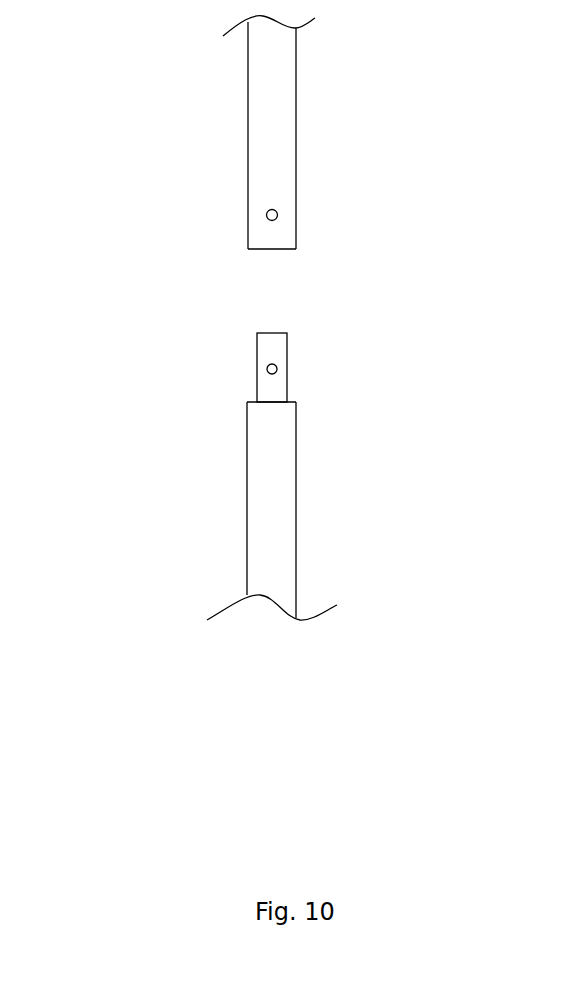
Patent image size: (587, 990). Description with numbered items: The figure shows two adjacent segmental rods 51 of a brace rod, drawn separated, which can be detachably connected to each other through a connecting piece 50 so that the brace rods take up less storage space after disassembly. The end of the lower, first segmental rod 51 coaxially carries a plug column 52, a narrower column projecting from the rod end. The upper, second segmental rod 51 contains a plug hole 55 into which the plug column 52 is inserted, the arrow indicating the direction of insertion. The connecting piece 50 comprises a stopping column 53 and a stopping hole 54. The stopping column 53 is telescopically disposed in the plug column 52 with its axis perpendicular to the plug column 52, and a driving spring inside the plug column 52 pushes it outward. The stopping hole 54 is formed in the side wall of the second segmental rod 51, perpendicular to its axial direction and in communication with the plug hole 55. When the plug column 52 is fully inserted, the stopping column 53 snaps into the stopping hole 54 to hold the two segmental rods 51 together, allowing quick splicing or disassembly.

The connecting piece 50 is at (228, 299).
The segmental rod 51 is at (287, 143).
The plug column 52 is at (290, 348).
The stopping column 53 is at (268, 367).
The stopping hole 54 is at (267, 212).
The plug hole 55 is at (288, 257).